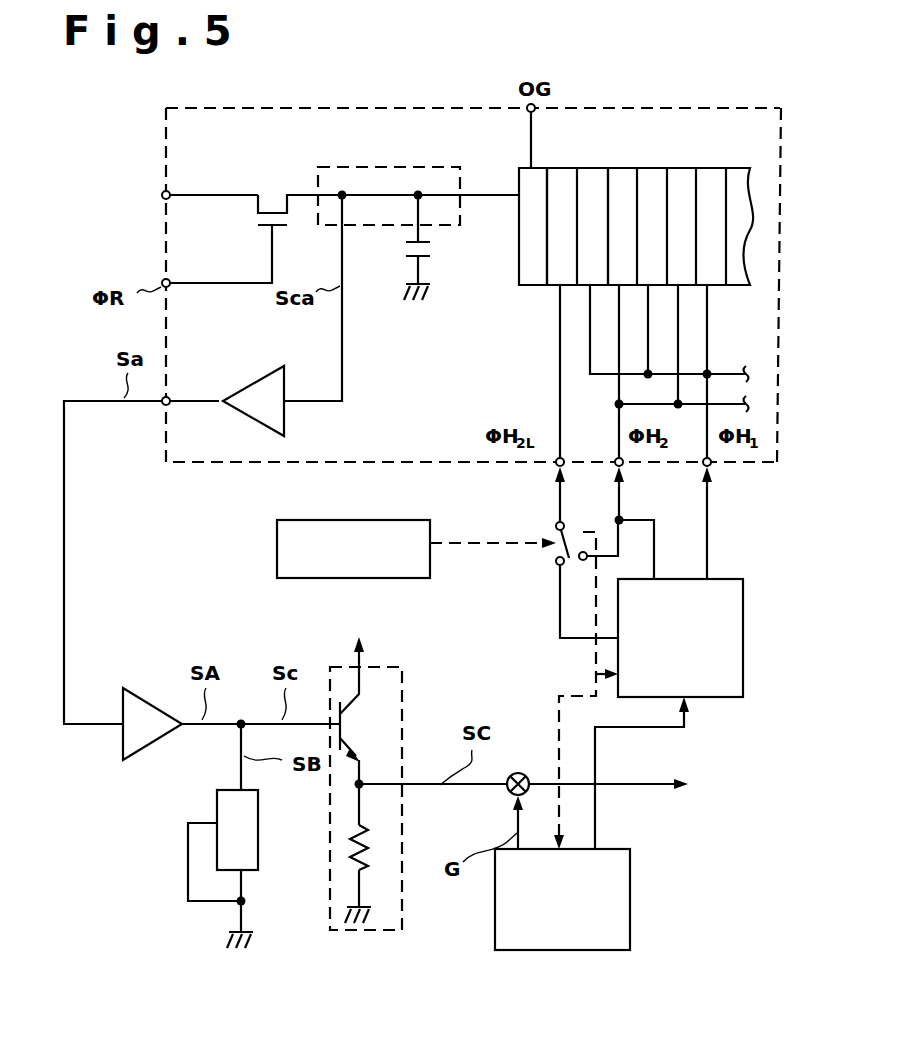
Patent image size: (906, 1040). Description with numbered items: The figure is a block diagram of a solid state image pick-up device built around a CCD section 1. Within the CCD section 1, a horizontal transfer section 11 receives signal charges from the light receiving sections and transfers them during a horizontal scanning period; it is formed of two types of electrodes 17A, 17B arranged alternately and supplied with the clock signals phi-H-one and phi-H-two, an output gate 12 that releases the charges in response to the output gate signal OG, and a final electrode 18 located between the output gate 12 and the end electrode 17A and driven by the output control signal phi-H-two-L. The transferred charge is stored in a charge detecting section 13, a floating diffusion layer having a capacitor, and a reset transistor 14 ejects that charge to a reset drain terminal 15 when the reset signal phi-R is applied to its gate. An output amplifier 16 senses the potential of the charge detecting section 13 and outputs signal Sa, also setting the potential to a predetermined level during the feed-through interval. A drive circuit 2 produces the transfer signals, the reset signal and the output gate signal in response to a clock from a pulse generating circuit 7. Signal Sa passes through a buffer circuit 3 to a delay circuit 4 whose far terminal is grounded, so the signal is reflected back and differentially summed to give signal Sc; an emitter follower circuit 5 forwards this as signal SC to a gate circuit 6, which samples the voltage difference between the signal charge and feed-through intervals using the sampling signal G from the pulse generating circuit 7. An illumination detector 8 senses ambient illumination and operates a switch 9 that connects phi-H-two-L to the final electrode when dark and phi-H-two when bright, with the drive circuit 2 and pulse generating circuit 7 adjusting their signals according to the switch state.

The CCD section 1 is at (613, 108).
The drive circuit 2 is at (747, 657).
The buffer circuit 3 is at (156, 745).
The delay circuit 4 is at (258, 867).
The emitter follower circuit 5 is at (376, 934).
The gate circuit 6 is at (506, 796).
The pulse generating circuit 7 is at (548, 952).
The illumination detector 8 is at (290, 579).
The switch 9 is at (548, 560).
The horizontal transfer section 11 is at (759, 240).
The output gate 12 is at (528, 286).
The charge detecting section 13 is at (356, 167).
The reset transistor 14 is at (264, 192).
The reset drain terminal 15 is at (161, 196).
The output amplifier 16 is at (242, 388).
The electrode 17A is at (594, 168).
The electrode 17B is at (628, 168).
The final electrode 18 is at (555, 286).